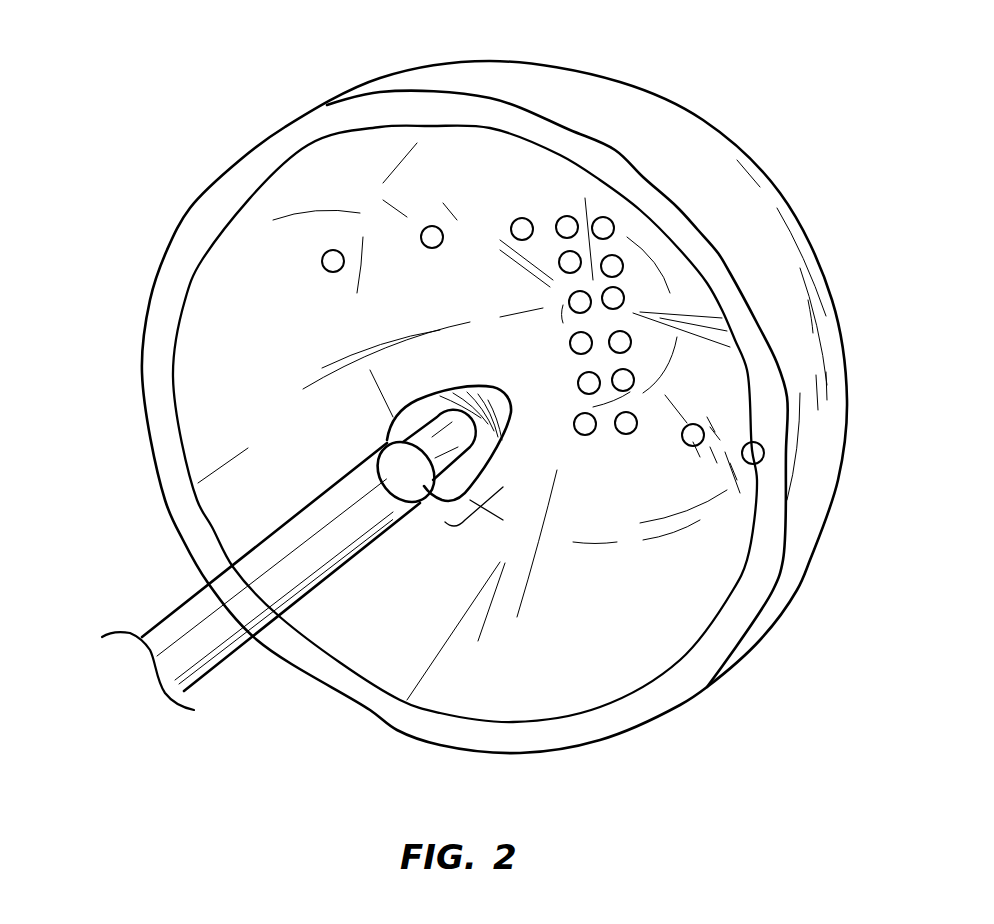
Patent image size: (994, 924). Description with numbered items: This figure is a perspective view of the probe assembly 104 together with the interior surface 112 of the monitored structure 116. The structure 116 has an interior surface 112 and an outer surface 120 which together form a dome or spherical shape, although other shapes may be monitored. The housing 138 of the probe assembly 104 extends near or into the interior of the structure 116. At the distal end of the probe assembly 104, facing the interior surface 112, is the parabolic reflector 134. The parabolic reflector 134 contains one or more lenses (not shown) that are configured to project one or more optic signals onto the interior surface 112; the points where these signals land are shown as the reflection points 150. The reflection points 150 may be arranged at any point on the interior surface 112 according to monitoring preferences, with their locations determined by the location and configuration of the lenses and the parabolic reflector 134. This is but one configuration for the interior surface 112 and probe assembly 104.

The probe assembly 104 is at (517, 477).
The interior surface 112 is at (244, 272).
The structure 116 is at (222, 187).
The outer surface 120 is at (740, 200).
The parabolic reflector 134 is at (468, 384).
The housing 138 is at (385, 440).
The reflection points 150 is at (520, 218).